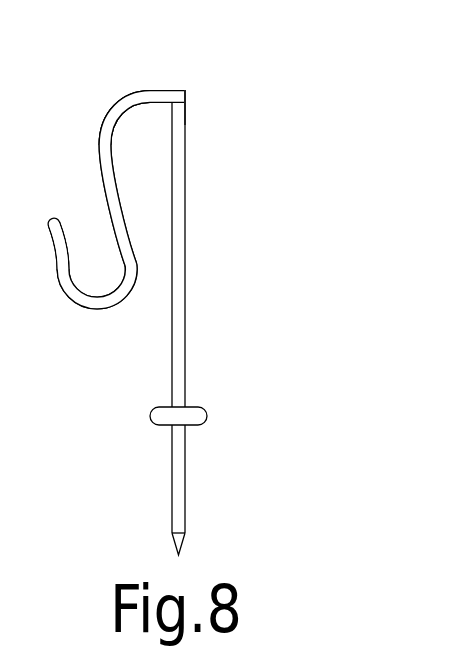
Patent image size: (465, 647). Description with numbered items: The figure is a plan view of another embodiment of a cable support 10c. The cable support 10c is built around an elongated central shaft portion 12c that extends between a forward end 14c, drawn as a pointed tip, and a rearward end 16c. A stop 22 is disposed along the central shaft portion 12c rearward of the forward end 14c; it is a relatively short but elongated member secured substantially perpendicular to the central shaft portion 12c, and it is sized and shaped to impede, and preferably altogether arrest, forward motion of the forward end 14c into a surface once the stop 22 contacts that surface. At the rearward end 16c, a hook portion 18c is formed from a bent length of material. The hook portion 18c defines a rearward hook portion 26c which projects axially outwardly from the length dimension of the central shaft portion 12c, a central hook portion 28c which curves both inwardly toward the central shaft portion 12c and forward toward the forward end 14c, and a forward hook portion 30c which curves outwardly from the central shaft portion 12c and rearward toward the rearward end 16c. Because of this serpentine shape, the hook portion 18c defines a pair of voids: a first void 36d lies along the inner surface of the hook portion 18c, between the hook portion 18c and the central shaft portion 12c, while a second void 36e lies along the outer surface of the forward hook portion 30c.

The cable support 10c is at (263, 67).
The central shaft portion 12c is at (187, 293).
The forward end 14c is at (202, 512).
The rearward end 16c is at (187, 117).
The hook portion 18c is at (107, 108).
The stop 22 is at (157, 418).
The rearward hook portion 26c is at (156, 90).
The central hook portion 28c is at (100, 175).
The forward hook portion 30c is at (49, 219).
The first void 36d is at (163, 154).
The second void 36e is at (115, 275).